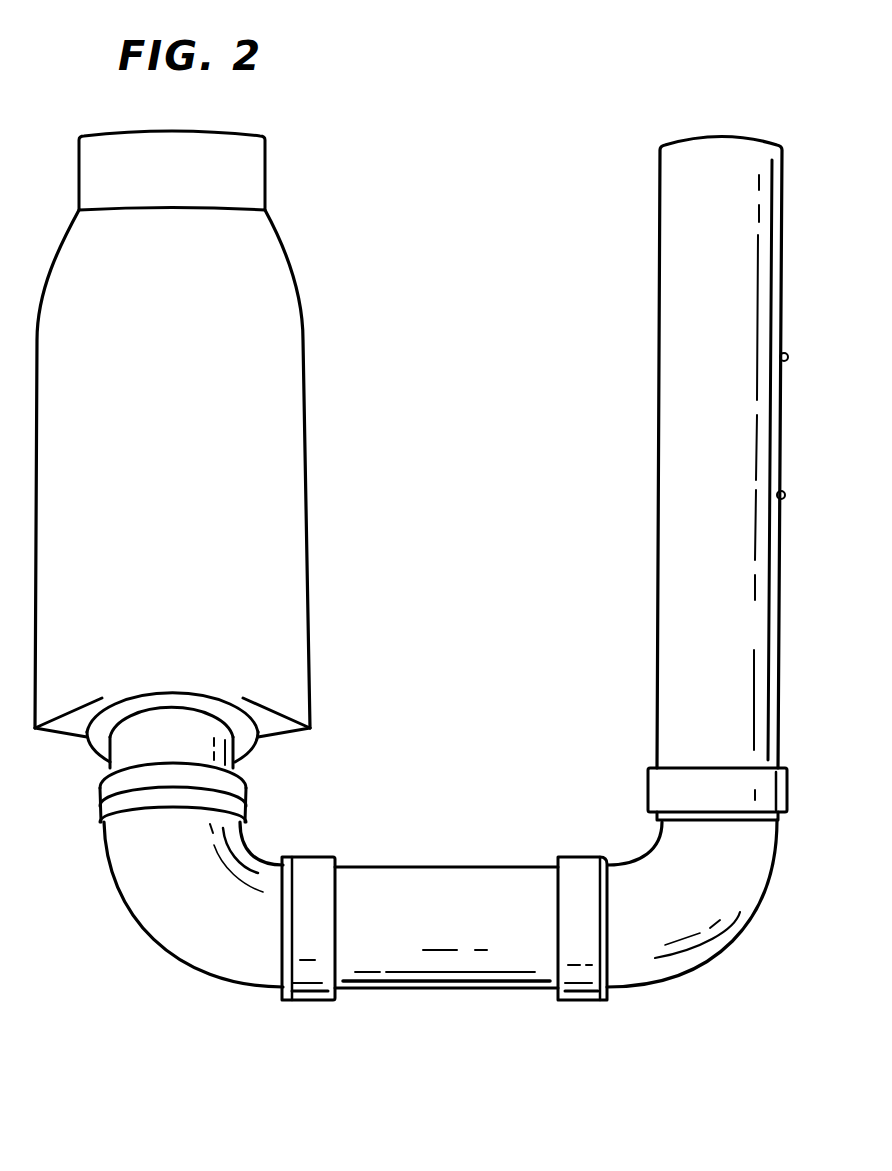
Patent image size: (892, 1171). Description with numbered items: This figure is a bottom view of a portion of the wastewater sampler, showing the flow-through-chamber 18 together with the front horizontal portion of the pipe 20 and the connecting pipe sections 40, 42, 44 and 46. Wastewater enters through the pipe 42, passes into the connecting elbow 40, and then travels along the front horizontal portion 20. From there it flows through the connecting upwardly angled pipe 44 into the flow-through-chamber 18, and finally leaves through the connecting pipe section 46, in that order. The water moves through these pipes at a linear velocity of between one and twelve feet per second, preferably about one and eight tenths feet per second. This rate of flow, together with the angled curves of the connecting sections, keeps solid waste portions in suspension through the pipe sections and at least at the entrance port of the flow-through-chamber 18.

The flow-through-chamber 18 is at (278, 352).
The connecting pipe section 46 is at (247, 177).
The connecting upwardly angled pipe 44 is at (235, 766).
The front horizontal portion of the pipe 20 is at (492, 888).
The connecting elbow 40 is at (665, 858).
The pipe 42 is at (678, 530).